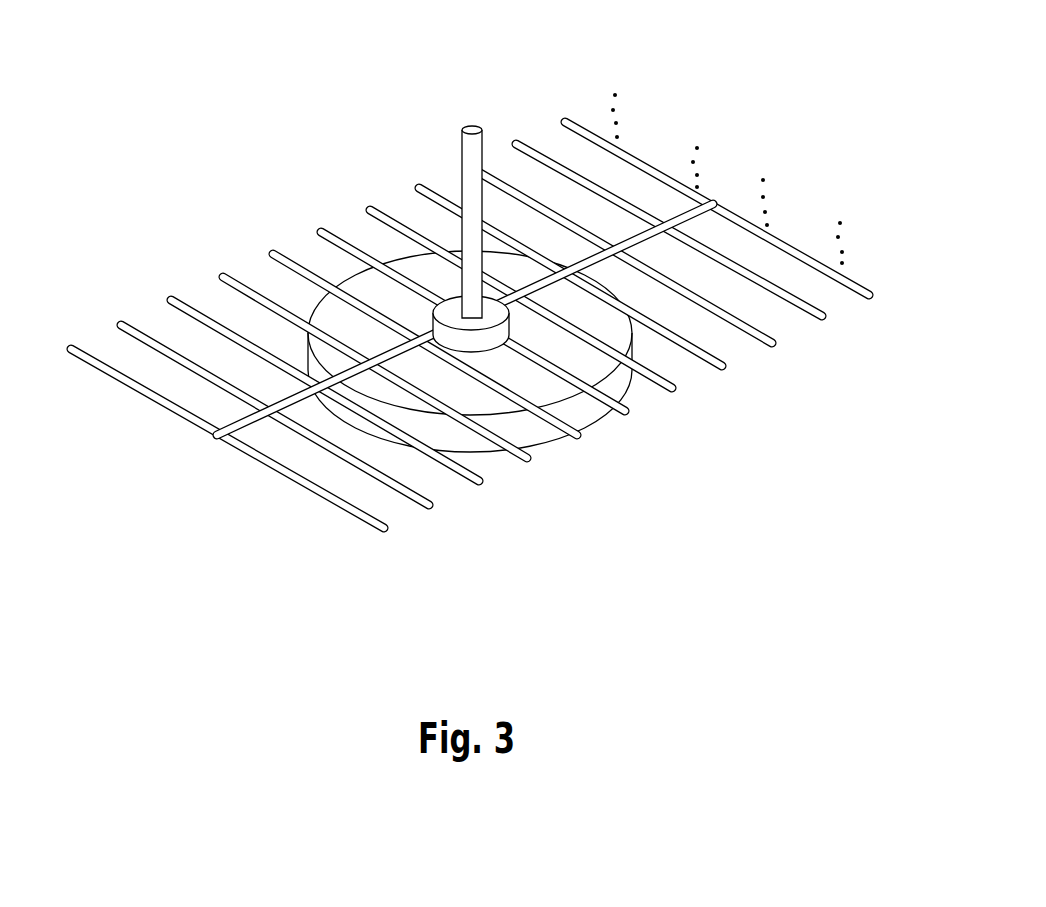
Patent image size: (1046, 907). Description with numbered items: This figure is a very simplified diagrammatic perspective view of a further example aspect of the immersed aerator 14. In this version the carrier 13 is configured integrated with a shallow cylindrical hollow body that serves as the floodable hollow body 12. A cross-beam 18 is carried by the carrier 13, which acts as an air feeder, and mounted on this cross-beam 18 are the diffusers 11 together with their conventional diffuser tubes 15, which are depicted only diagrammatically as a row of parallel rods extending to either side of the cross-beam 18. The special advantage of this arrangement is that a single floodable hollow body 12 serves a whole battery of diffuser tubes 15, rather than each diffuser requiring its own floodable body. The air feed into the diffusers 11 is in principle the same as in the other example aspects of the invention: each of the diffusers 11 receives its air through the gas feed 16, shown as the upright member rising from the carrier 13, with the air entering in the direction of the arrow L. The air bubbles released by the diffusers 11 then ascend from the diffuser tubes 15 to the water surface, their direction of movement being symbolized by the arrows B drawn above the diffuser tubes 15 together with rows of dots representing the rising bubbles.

The diffuser 11 is at (750, 332).
The floodable hollow body 12 is at (598, 402).
The carrier 13 is at (430, 300).
The immersed aerator 14 is at (266, 162).
The diffuser tubes 15 is at (292, 475).
The gas feed 16 is at (468, 157).
The cross-beam 18 is at (706, 206).
The arrow, air feed direction L is at (471, 112).
The arrow, bubble movement direction B is at (642, 147).